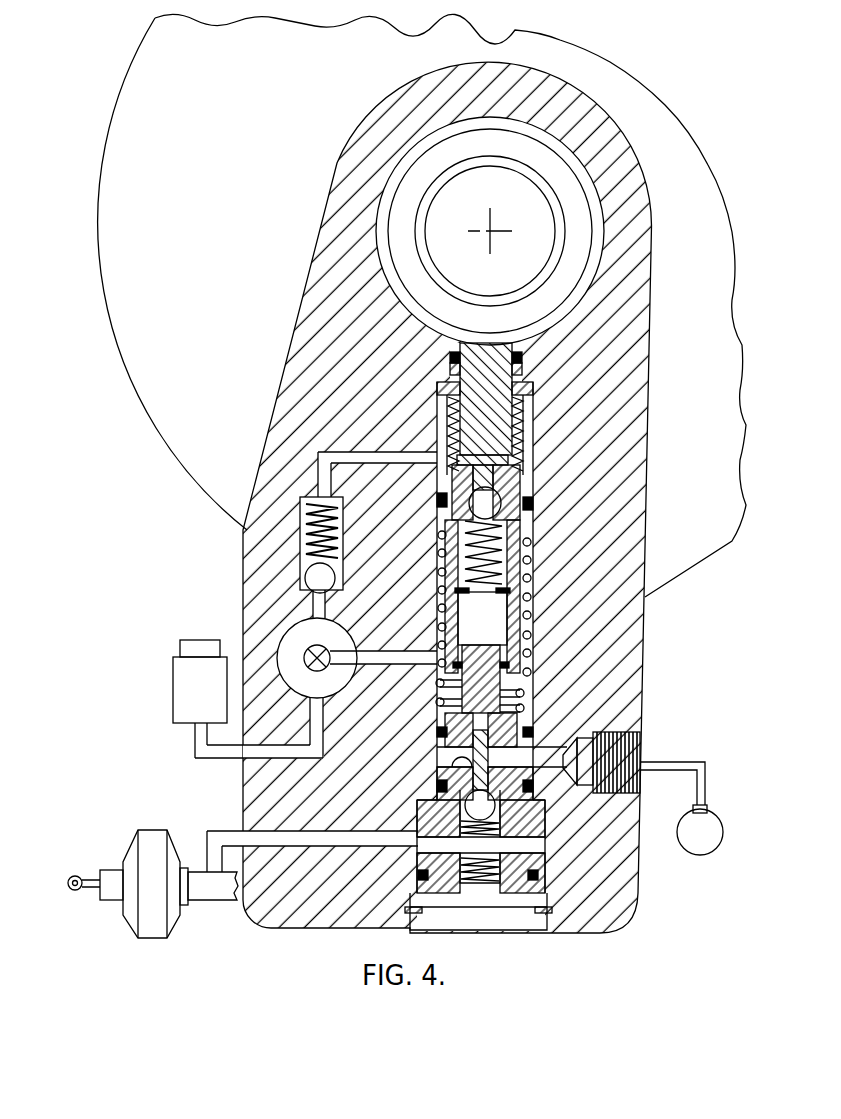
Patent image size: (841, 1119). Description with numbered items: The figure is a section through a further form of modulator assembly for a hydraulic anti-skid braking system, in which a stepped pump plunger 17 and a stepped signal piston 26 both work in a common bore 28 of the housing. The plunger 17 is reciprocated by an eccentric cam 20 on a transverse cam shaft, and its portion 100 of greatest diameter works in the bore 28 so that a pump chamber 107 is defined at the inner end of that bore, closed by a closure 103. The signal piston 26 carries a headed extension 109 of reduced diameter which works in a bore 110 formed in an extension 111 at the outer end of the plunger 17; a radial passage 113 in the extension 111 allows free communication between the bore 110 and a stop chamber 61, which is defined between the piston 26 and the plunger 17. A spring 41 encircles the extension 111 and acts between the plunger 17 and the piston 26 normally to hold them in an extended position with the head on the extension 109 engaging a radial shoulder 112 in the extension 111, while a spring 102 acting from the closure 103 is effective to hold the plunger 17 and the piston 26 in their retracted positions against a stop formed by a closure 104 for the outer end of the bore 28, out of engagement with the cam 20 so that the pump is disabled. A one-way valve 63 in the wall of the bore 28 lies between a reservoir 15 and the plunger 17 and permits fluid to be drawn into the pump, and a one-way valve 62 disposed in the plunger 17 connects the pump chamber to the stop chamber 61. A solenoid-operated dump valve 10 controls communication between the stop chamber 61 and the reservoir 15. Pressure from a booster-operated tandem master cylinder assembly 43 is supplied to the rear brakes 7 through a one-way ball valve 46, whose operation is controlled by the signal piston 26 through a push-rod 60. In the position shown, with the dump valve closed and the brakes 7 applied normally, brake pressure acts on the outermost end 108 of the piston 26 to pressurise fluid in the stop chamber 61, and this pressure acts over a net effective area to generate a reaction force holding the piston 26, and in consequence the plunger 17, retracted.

The rear brakes 7 is at (705, 807).
The solenoid-operated dump valve 10 is at (287, 653).
The reservoir 15 is at (183, 690).
The pump plunger 17 is at (468, 390).
The eccentric cam 20 is at (573, 272).
The signal piston 26 is at (535, 725).
The bore 28 is at (530, 642).
The spring 41 is at (538, 582).
The booster-operated tandem master cylinder assembly 43 is at (215, 890).
The one-way ball valve 46 is at (503, 818).
The push-rod 60 is at (432, 812).
The stop chamber 61 is at (432, 702).
The one-way valve 62 is at (525, 492).
The one-way valve 63 is at (312, 583).
The portion of greatest diameter 100 is at (543, 527).
The spring 102 is at (533, 432).
The closure 103 is at (527, 390).
The closure 104 is at (520, 893).
The pump chamber 107 is at (443, 418).
The outermost end 108 is at (435, 761).
The headed extension 109 is at (538, 660).
The bore 110 is at (535, 610).
The extension 111 is at (540, 548).
The radial shoulder 112 is at (530, 690).
The radial passage 113 is at (440, 580).